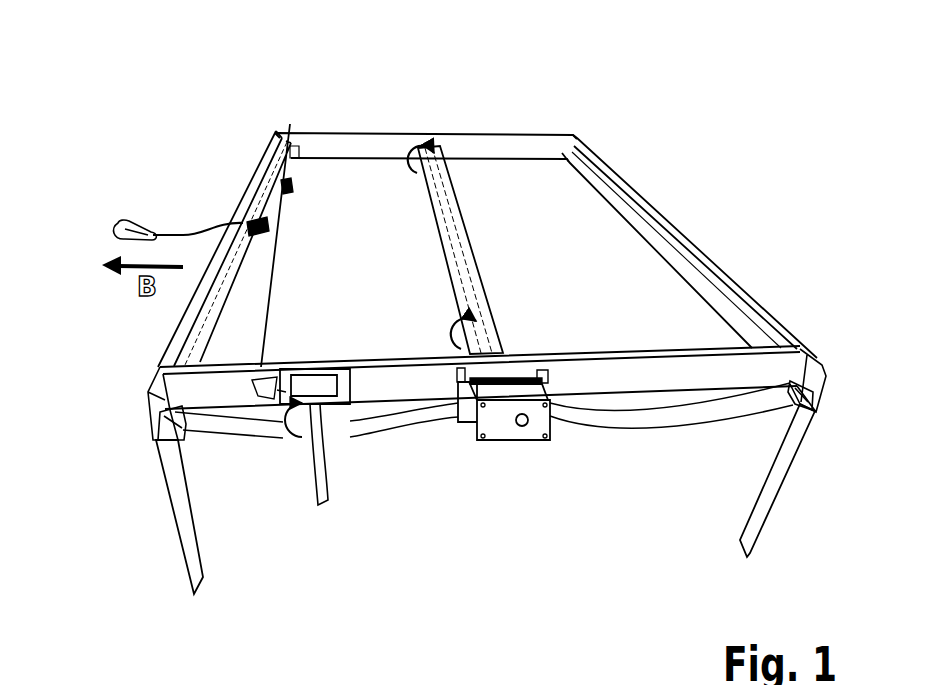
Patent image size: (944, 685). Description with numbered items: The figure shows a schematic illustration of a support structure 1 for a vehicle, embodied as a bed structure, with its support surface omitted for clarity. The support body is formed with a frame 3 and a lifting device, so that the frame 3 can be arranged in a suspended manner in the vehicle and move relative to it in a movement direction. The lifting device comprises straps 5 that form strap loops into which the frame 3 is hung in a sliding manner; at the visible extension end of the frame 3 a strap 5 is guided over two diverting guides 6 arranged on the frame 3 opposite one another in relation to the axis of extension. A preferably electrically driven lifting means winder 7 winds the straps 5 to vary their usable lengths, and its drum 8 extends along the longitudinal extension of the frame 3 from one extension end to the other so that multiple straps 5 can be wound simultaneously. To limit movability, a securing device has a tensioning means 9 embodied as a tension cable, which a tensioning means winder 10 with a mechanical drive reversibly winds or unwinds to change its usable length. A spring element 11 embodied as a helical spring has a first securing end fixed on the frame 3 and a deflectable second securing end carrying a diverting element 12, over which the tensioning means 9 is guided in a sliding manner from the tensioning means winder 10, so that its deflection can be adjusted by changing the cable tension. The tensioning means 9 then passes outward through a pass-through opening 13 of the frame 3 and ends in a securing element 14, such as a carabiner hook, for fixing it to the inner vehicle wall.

The support structure 1 is at (100, 78).
The frame 3 is at (622, 180).
The straps 5 is at (195, 552).
The diverting guides 6 is at (175, 410).
The lifting means winder 7 is at (503, 424).
The drum 8 is at (453, 268).
The tensioning means 9 is at (182, 233).
The tensioning means winder 10 is at (327, 407).
The spring element 11 is at (291, 126).
The diverting element 12 is at (292, 187).
The pass-through opening 13 is at (249, 236).
The securing element 14 is at (125, 222).